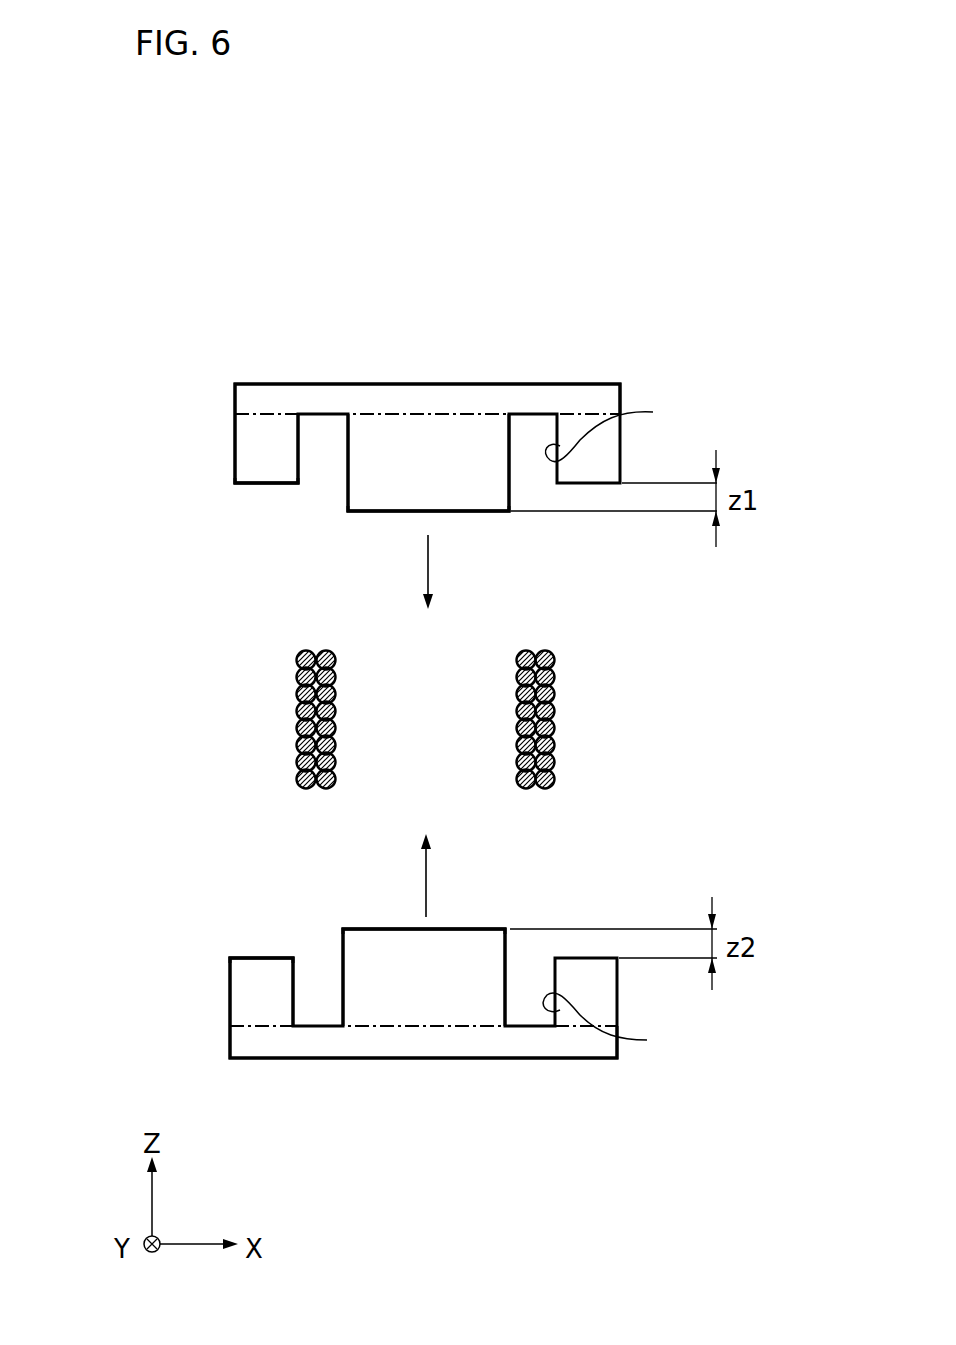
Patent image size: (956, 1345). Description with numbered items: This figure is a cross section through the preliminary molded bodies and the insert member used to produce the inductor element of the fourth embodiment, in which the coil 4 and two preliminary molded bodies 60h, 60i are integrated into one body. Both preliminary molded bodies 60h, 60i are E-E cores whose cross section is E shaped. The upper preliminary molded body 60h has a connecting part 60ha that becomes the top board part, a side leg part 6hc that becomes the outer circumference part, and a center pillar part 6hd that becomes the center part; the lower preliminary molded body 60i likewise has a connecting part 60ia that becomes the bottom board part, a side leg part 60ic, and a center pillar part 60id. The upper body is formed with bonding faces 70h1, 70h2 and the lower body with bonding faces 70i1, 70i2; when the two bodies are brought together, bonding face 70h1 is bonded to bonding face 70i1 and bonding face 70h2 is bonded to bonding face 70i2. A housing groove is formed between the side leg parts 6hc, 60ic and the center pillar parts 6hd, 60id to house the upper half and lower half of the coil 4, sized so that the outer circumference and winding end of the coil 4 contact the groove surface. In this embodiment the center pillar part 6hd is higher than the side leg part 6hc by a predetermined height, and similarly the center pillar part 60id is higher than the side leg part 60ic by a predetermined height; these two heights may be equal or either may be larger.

The preliminary molded body 60h is at (622, 383).
The connecting part 60ha is at (470, 400).
The side leg part 6hc is at (263, 447).
The center pillar part 6hd is at (402, 487).
The bonding face 70h1 is at (410, 513).
The bonding face 70h2 is at (263, 485).
The coil 4 is at (556, 666).
The preliminary molded body 60i is at (602, 1060).
The connecting part 60ia is at (432, 1030).
The side leg part 60ic is at (257, 1002).
The center pillar part 60id is at (393, 960).
The bonding face 70i1 is at (474, 927).
The bonding face 70i2 is at (258, 956).